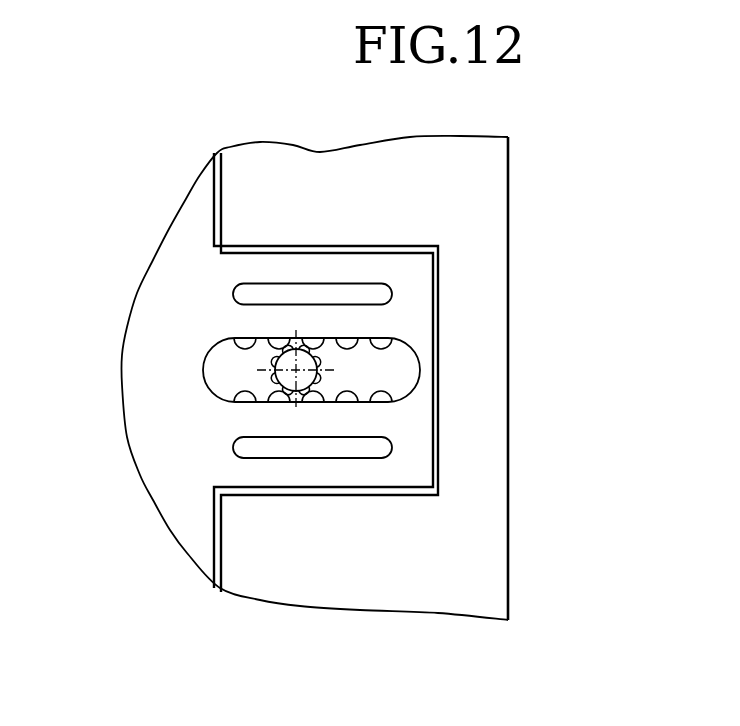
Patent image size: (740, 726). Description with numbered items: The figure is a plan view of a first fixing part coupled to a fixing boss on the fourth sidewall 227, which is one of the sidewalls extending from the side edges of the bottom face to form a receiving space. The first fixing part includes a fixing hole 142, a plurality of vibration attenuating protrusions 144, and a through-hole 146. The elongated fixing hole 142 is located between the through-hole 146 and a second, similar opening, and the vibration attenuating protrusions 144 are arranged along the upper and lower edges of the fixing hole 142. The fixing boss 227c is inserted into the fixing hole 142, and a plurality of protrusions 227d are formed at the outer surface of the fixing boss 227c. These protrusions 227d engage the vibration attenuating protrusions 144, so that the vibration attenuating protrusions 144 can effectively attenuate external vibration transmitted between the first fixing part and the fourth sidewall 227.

The fixing hole 142 is at (405, 364).
The vibration attenuating protrusion 144 is at (386, 391).
The through-hole 146 is at (390, 448).
The fourth sidewall 227 is at (480, 560).
The fixing boss 227c is at (274, 367).
The protrusions 227d is at (274, 372).